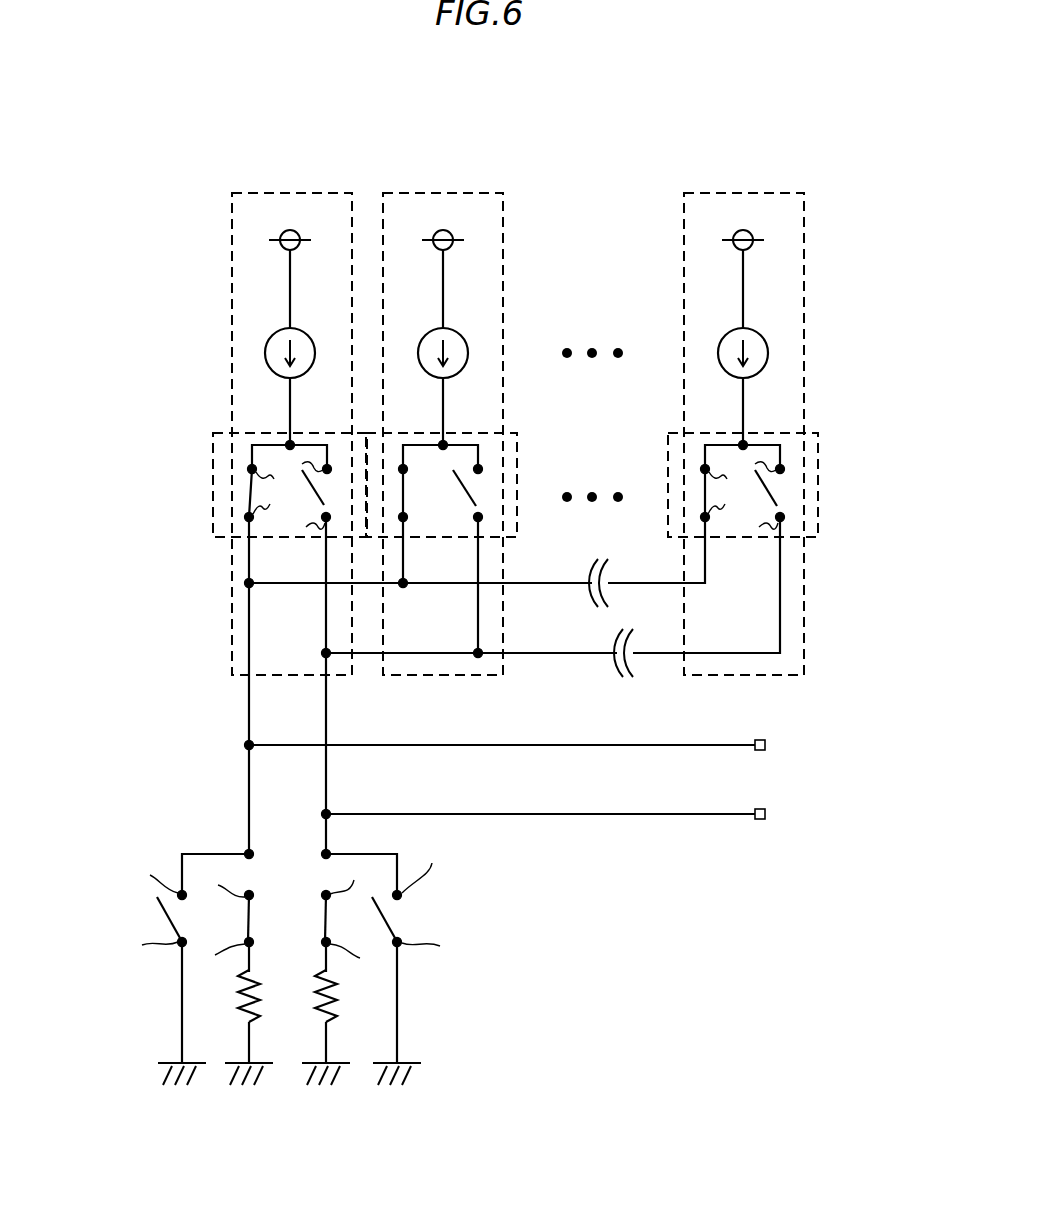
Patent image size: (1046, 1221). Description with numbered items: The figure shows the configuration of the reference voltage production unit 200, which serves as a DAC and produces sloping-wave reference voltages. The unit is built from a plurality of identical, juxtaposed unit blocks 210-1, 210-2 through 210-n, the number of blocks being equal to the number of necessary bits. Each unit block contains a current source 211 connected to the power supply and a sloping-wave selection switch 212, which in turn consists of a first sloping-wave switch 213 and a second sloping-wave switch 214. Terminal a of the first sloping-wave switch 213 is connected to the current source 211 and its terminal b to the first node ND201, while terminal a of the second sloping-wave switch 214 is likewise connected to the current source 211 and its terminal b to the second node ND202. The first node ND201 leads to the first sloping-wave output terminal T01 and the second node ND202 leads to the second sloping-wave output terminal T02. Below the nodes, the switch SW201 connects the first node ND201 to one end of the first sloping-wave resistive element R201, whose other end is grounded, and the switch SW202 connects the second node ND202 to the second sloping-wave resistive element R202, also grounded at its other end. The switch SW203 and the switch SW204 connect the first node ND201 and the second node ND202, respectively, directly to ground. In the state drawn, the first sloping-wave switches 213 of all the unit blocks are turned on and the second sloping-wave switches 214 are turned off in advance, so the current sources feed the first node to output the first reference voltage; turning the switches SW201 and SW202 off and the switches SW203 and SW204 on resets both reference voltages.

The reference voltage production unit 200 is at (520, 136).
The unit block 210-1 is at (290, 192).
The unit block 210-2 is at (442, 192).
The unit block 210-n is at (748, 192).
The current source 211 is at (265, 353).
The sloping-wave selection switch 212 is at (212, 467).
The first sloping-wave switch 213 is at (247, 490).
The second sloping-wave switch 214 is at (317, 496).
The first node ND201 is at (244, 745).
The second node ND202 is at (330, 812).
The first sloping-wave output terminal T01 is at (765, 742).
The second sloping-wave output terminal T02 is at (758, 821).
The switch SW201 is at (249, 925).
The switch SW202 is at (318, 920).
The switch SW203 is at (160, 920).
The switch SW204 is at (402, 918).
The first sloping-wave resistive element R201 is at (249, 998).
The second sloping-wave resistive element R202 is at (335, 995).